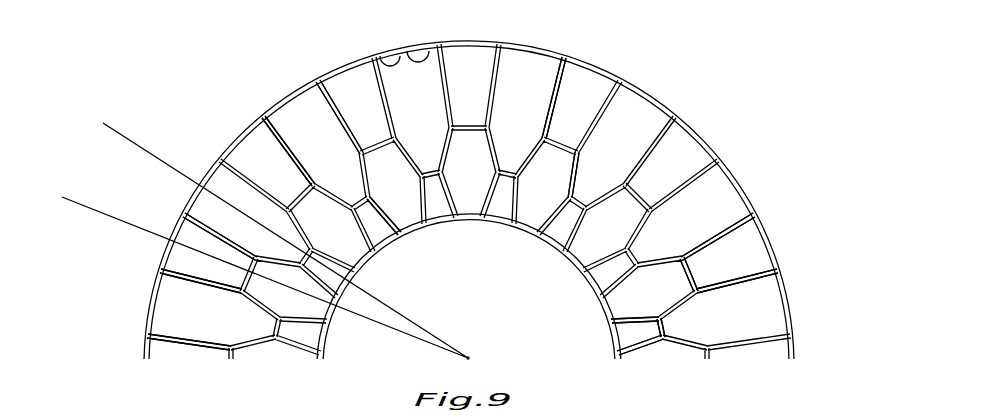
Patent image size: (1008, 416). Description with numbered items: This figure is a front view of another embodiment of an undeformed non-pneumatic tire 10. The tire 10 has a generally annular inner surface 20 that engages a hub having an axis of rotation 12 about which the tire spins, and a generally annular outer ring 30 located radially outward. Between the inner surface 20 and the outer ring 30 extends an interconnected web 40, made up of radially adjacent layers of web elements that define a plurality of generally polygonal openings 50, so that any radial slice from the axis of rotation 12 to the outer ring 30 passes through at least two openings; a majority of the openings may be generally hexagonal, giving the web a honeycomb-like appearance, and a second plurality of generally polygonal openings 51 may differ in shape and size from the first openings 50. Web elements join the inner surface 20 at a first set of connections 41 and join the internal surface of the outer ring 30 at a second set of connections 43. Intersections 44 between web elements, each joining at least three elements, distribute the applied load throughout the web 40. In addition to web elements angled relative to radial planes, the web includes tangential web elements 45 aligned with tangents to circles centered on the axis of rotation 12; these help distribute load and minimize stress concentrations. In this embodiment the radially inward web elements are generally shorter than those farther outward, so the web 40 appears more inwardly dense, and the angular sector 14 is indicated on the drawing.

The non-pneumatic tire 10 is at (727, 92).
The axis of rotation 12 is at (472, 356).
The angular sector 14 is at (102, 125).
The generally annular inner surface 20 is at (395, 250).
The generally annular outer ring 30 is at (712, 142).
The interconnected web 40 is at (703, 268).
The first set of connections 41 is at (400, 223).
The second set of connections 43 is at (406, 52).
The intersections 44 is at (310, 182).
The tangential web elements 45 is at (570, 198).
The generally polygonal openings 50 is at (626, 327).
The second plurality of generally polygonal openings 51 is at (165, 340).